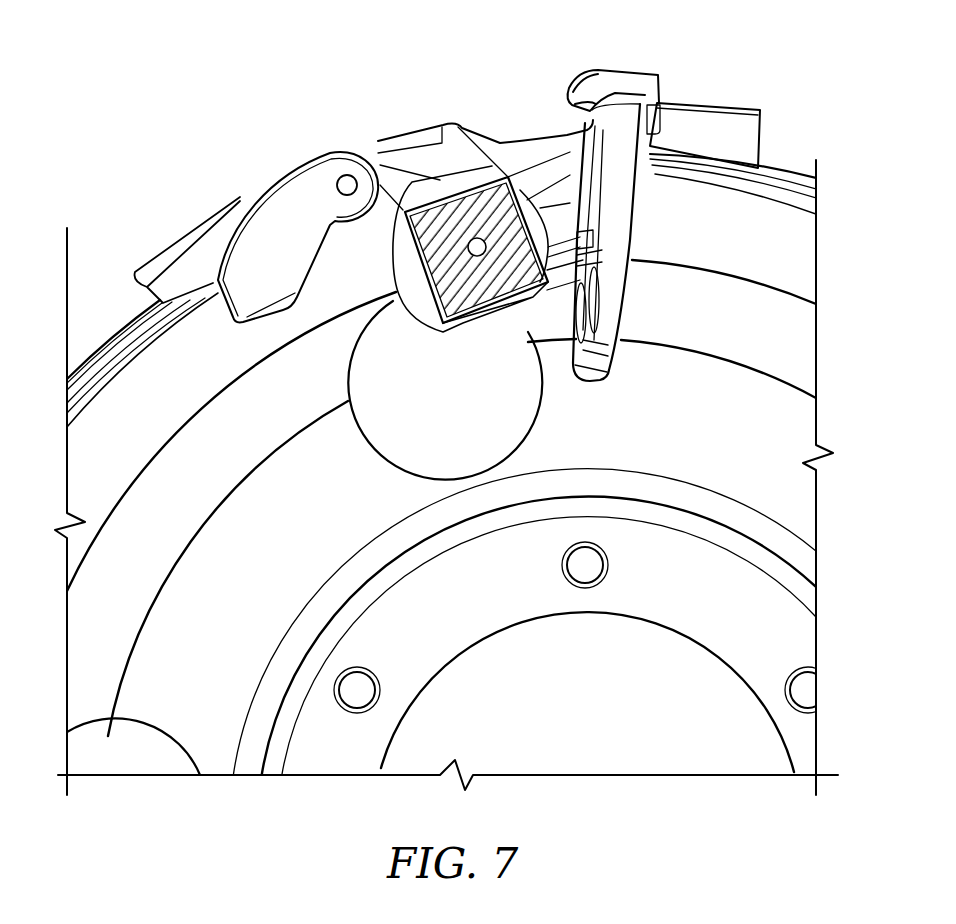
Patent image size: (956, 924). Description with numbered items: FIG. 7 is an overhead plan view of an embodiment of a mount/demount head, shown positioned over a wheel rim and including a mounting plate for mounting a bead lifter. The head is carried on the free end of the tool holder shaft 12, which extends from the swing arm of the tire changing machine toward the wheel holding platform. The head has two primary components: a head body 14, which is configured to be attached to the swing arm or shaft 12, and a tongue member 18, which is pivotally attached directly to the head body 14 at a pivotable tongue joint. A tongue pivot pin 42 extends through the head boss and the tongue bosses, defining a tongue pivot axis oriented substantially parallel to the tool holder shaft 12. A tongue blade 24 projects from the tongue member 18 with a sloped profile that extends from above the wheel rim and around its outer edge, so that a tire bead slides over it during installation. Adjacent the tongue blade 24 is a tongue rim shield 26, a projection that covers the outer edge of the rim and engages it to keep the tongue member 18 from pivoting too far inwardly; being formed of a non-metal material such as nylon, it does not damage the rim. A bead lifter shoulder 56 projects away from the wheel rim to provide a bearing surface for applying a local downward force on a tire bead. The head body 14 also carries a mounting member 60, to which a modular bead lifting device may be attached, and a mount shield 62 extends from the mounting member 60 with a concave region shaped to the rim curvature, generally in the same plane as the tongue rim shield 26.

The tool holder shaft 12 is at (467, 320).
The head body 14 is at (423, 130).
The tongue member 18 is at (288, 207).
The tongue blade 24 is at (182, 283).
The tongue rim shield 26 is at (188, 227).
The tongue pivot pin 42 is at (347, 176).
The bead lifter shoulder 56 is at (587, 82).
The mounting member 60 is at (612, 317).
The mount shield 62 is at (702, 102).